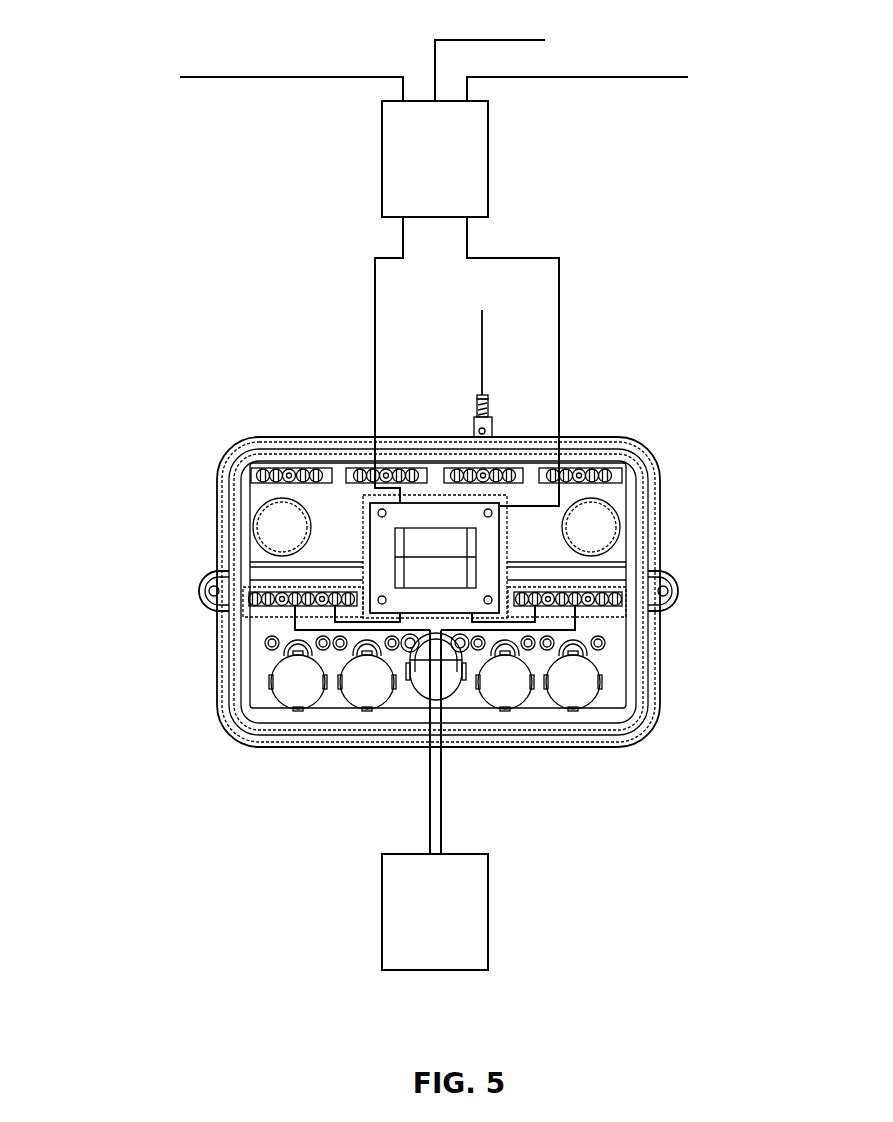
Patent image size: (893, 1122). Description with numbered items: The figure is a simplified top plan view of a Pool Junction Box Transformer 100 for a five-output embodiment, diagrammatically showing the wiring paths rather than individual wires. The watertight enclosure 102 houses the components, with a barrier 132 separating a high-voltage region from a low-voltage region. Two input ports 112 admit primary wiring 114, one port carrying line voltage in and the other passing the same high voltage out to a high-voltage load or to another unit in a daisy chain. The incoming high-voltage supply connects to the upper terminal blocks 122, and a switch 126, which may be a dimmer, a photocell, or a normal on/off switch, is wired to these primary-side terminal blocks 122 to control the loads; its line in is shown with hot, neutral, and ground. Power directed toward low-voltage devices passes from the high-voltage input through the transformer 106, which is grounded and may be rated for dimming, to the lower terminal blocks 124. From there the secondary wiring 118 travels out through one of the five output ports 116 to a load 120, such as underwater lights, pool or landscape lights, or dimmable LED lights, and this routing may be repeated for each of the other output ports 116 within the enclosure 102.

The Pool Junction Box Transformer 100 is at (150, 55).
The enclosure 102 is at (652, 475).
The transformer 106 is at (416, 584).
The input ports 112 is at (282, 528).
The primary wiring 114 is at (559, 303).
The output ports 116 is at (298, 688).
The secondary wiring 118 is at (441, 815).
The load 120 is at (458, 925).
The upper terminal blocks 122 is at (278, 470).
The lower terminal blocks 124 is at (282, 606).
The switch 126 is at (458, 170).
The barrier 132 is at (268, 573).